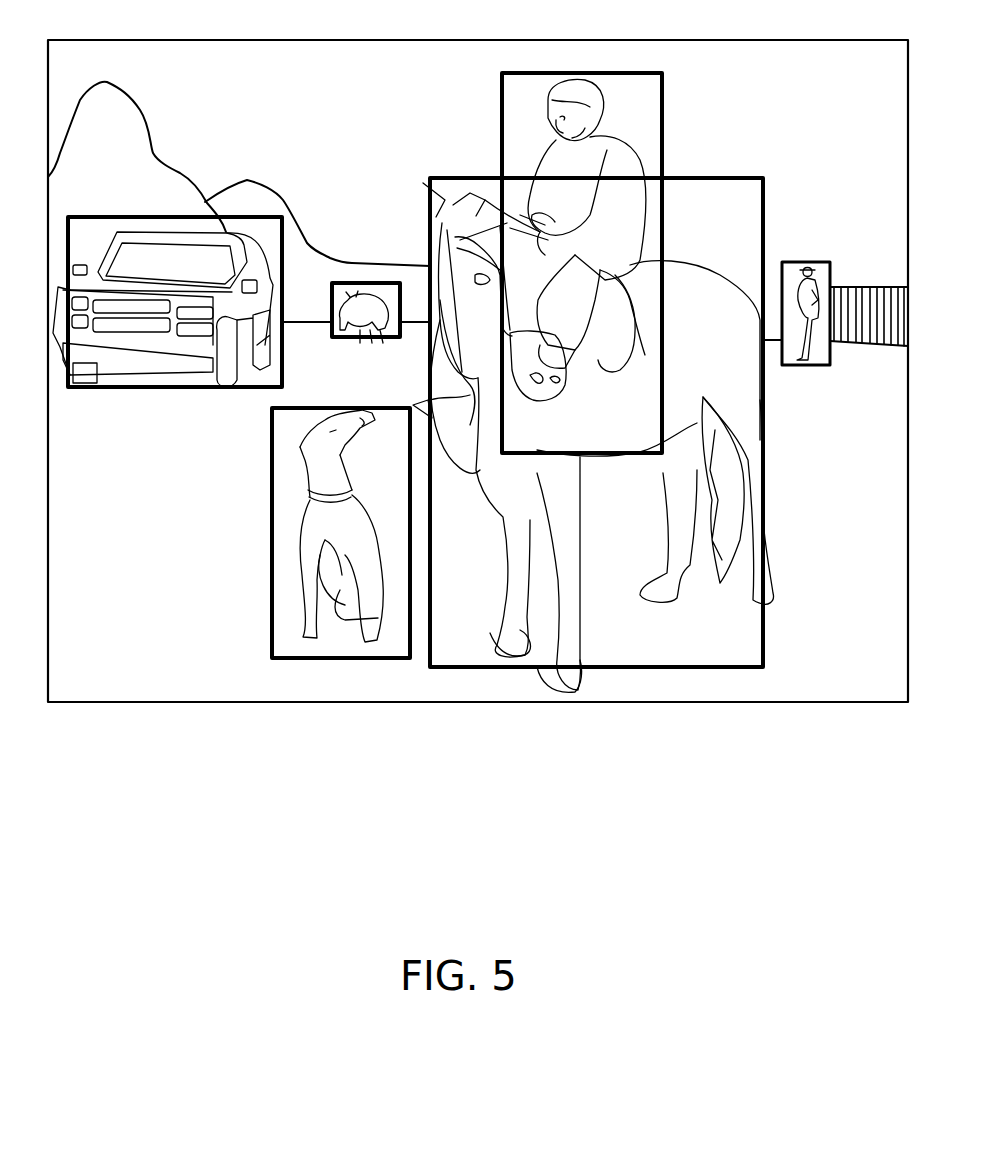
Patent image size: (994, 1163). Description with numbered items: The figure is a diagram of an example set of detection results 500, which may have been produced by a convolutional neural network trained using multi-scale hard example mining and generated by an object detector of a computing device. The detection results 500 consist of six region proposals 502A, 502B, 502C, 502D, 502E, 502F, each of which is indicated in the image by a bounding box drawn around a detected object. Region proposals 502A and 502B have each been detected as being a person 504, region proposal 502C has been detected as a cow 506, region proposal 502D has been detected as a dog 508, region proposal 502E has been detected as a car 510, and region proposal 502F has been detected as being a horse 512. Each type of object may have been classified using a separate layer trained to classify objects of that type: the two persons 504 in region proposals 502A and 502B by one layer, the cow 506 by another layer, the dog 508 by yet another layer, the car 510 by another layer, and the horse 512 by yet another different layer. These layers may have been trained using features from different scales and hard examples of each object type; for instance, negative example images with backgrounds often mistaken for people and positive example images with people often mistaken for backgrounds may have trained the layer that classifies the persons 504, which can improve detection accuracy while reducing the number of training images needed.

The detection results 500 is at (490, 937).
The region proposal 502A is at (793, 365).
The region proposal 502B is at (667, 98).
The region proposal 502C is at (337, 283).
The region proposal 502D is at (272, 585).
The region proposal 502E is at (182, 215).
The region proposal 502F is at (765, 620).
The person 504 is at (610, 50).
The cow 506 is at (356, 262).
The dog 508 is at (337, 377).
The car 510 is at (143, 183).
The horse 512 is at (718, 148).